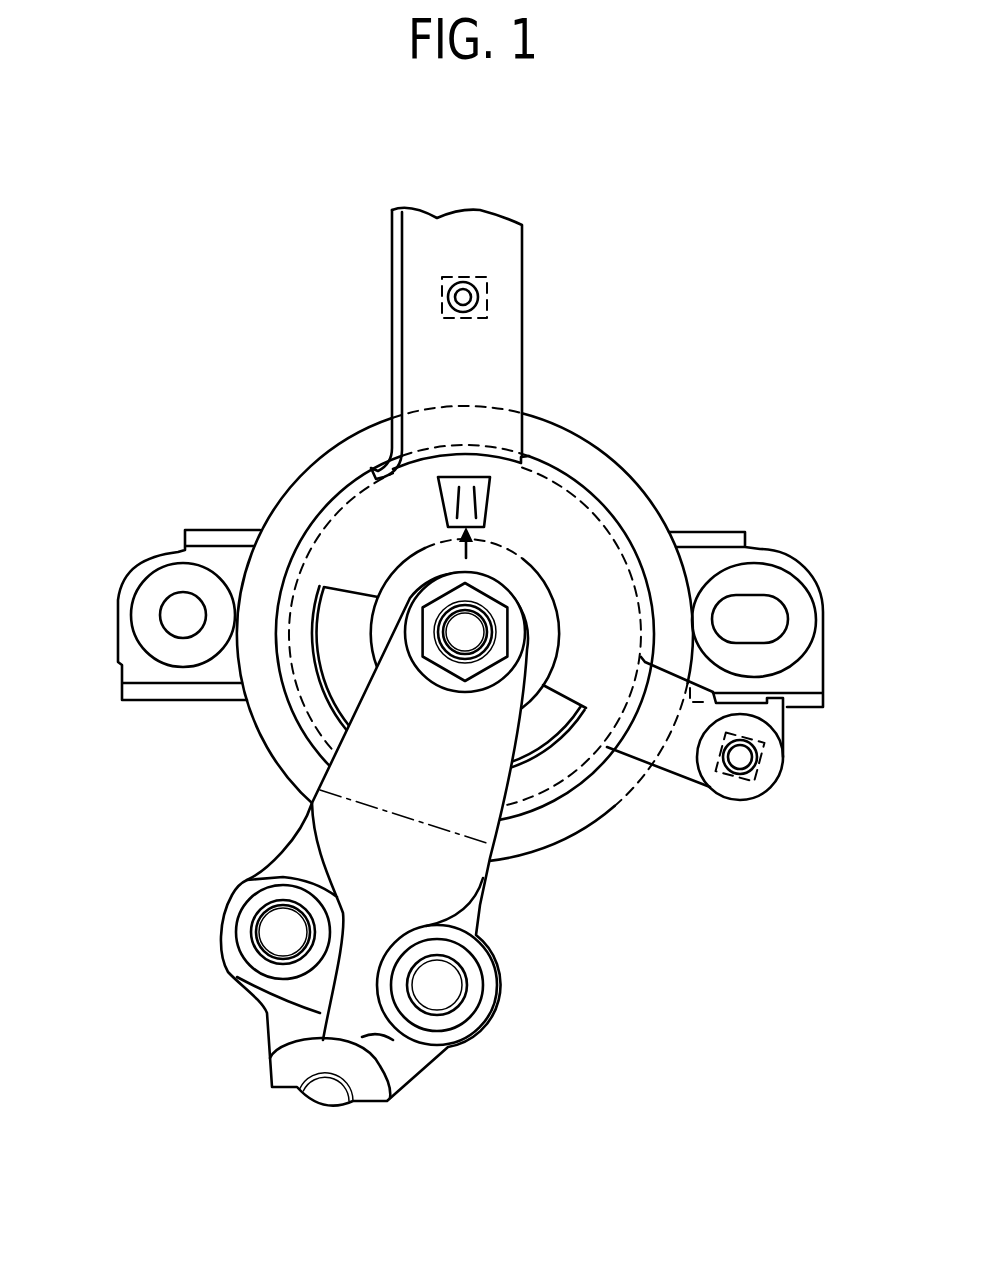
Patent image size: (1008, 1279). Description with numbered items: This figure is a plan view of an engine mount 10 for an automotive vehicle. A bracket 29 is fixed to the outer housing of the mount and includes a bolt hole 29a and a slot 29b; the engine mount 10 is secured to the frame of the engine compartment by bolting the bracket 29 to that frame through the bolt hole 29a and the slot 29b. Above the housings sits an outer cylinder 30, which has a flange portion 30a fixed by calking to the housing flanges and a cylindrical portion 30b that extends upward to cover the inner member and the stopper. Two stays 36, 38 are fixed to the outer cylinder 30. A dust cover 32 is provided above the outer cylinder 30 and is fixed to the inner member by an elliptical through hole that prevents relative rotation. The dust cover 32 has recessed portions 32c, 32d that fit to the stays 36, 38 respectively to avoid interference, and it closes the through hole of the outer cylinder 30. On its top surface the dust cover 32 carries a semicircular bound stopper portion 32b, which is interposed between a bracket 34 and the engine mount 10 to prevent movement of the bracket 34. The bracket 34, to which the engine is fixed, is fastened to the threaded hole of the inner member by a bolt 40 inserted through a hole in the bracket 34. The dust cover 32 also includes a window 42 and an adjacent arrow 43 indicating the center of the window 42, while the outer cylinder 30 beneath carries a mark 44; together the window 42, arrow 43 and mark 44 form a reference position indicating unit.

The engine mount 10 is at (606, 446).
The bracket 29 is at (163, 673).
The bolt hole 29a is at (183, 613).
The slot 29b is at (777, 617).
The outer cylinder 30 is at (510, 673).
The flange portion 30a is at (542, 835).
The cylindrical portion 30b is at (598, 774).
The dust cover 32 is at (477, 626).
The bound stopper portion 32b is at (340, 657).
The recessed portion 32c is at (627, 707).
The recessed portion 32d is at (402, 460).
The bracket 34 is at (405, 1065).
The stay 36 is at (777, 765).
The stay 38 is at (508, 244).
The bolt 40 is at (430, 660).
The window 42 is at (491, 500).
The arrow 43 is at (474, 545).
The mark 44 is at (443, 477).